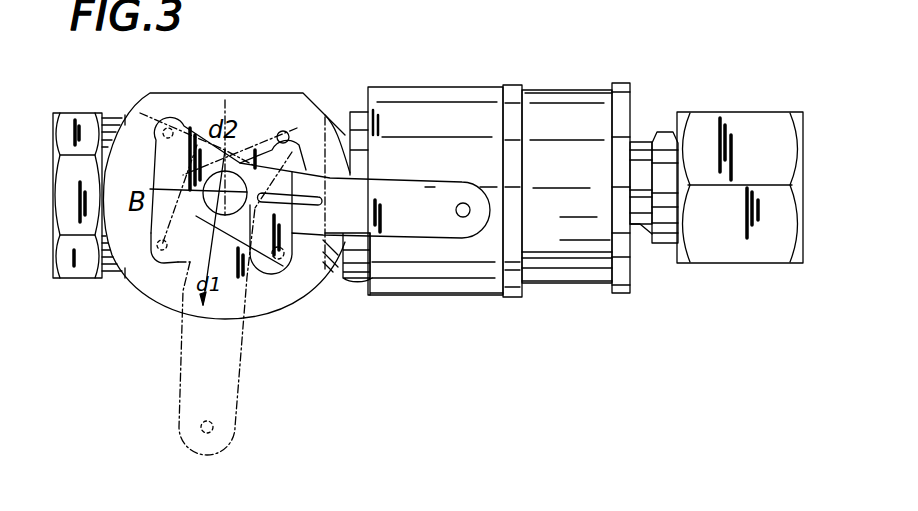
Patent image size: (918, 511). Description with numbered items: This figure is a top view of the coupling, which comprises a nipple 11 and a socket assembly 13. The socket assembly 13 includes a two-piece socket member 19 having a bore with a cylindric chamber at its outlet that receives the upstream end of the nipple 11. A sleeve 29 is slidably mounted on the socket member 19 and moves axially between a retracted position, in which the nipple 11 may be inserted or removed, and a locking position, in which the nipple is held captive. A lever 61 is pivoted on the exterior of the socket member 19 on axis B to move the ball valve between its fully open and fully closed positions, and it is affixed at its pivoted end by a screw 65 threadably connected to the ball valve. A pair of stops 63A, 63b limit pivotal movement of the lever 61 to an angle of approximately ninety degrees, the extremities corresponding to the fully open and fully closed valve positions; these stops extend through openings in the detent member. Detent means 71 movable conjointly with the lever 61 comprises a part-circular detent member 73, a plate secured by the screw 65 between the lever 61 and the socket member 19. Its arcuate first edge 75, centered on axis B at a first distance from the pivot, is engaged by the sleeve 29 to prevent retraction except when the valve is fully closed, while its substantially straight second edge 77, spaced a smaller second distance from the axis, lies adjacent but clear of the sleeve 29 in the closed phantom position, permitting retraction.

The nipple 11 is at (743, 111).
The socket assembly 13 is at (78, 280).
The socket member 19 is at (358, 280).
The sleeve 29 is at (573, 280).
The lever 61 is at (452, 230).
The stop 63A is at (163, 130).
The stop 63b is at (275, 282).
The screw 65 is at (226, 150).
The detent means 71 is at (320, 83).
The detent member 73 is at (168, 288).
The first edge 75 is at (267, 308).
The second edge 77 is at (210, 93).